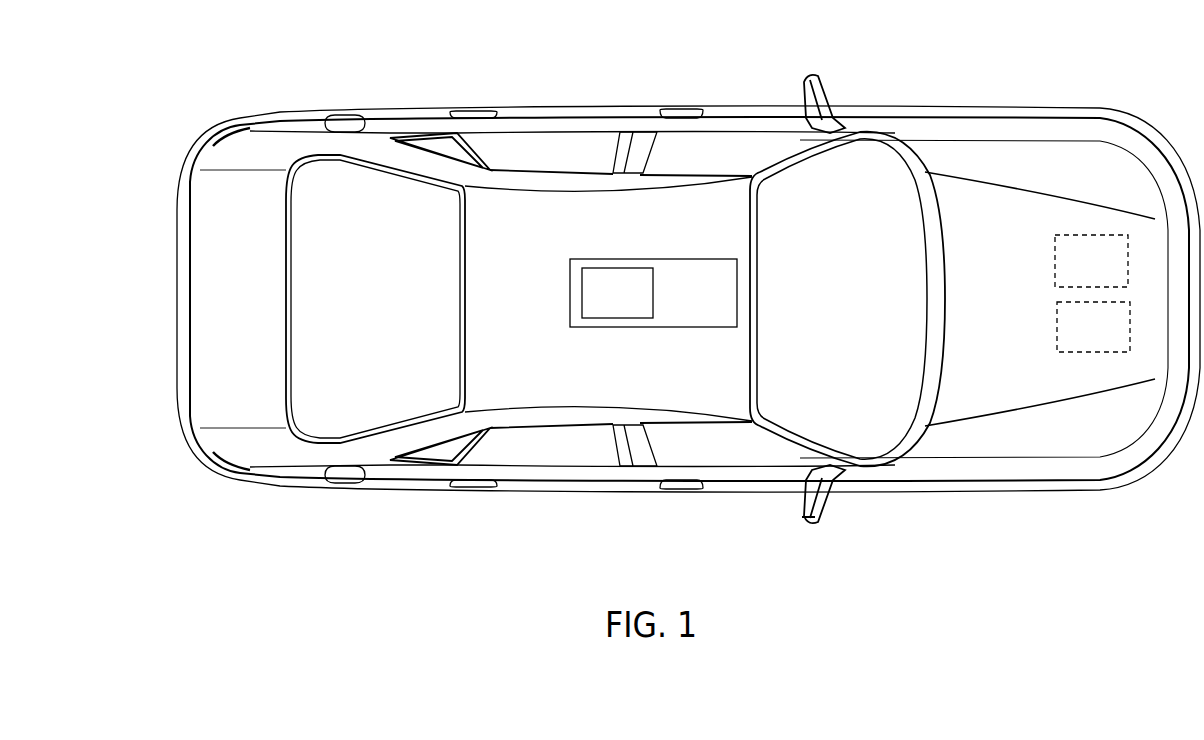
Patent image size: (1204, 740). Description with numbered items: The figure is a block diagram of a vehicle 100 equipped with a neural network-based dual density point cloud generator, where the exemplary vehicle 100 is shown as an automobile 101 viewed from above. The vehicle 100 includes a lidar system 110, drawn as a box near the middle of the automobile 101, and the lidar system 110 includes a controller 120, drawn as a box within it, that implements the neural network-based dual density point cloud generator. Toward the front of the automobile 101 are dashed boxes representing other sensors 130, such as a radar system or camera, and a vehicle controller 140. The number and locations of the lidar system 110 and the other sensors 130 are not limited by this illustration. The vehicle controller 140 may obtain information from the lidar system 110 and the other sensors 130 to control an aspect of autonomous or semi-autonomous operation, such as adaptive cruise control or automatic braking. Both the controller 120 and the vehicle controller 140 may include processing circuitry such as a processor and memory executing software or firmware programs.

The vehicle 100 is at (666, 287).
The automobile 101 is at (273, 130).
The lidar system 110 is at (713, 308).
The controller 120 is at (617, 293).
The other sensors 130 is at (1114, 276).
The vehicle controller 140 is at (1116, 343).